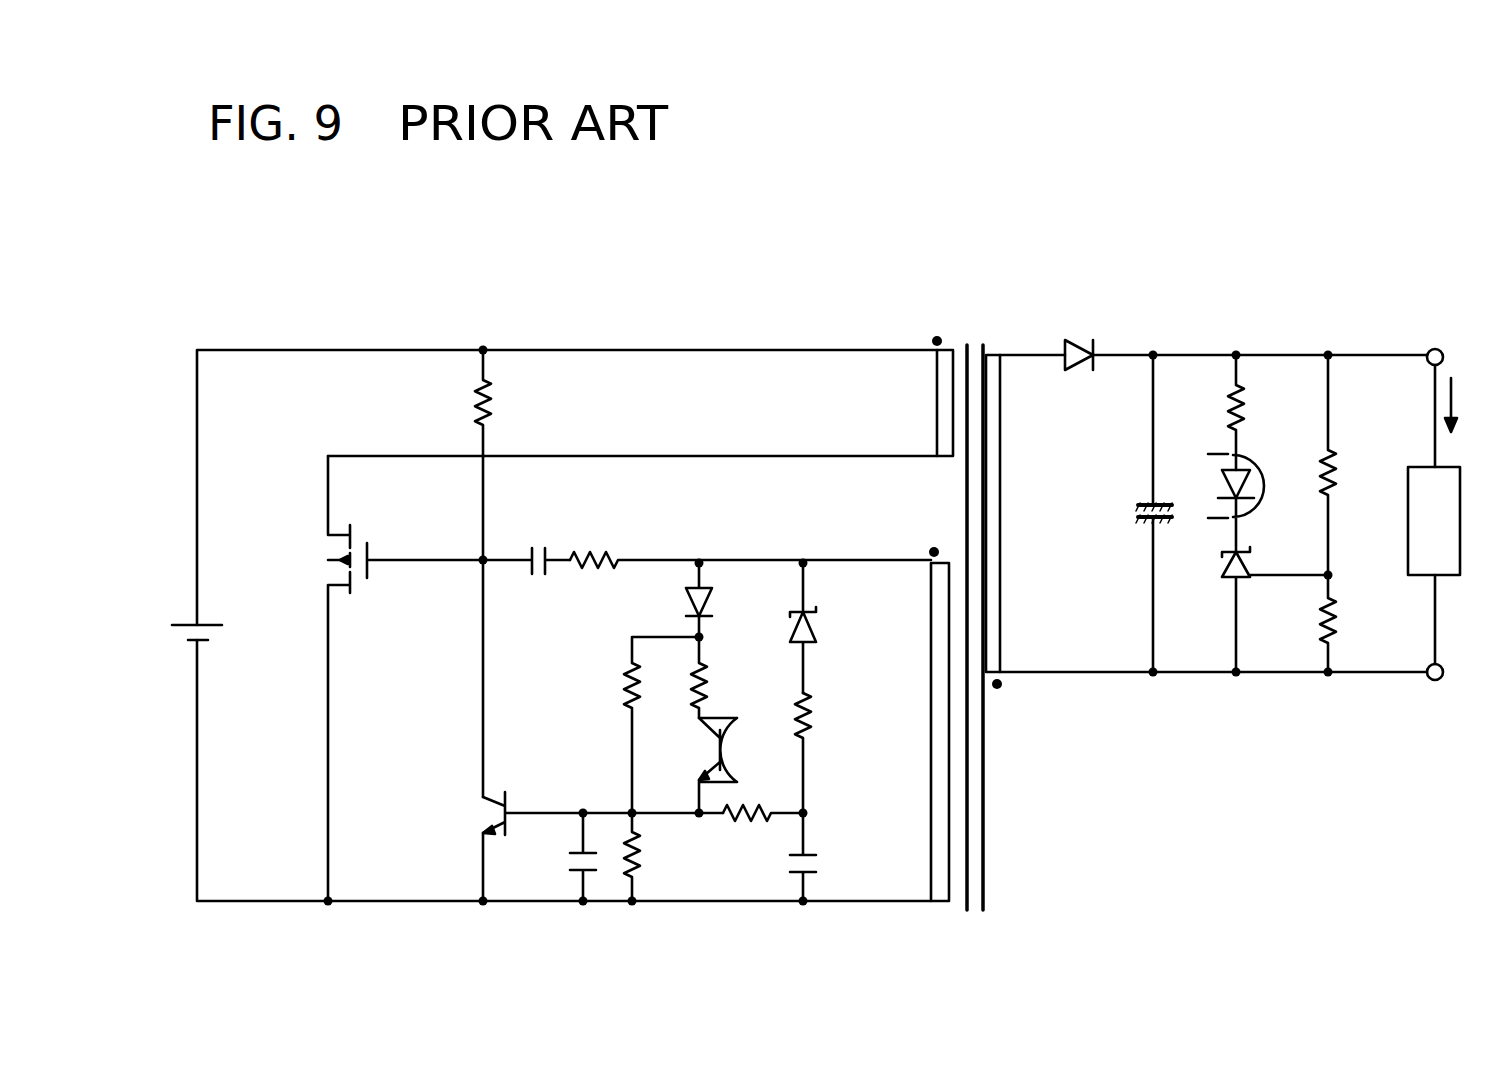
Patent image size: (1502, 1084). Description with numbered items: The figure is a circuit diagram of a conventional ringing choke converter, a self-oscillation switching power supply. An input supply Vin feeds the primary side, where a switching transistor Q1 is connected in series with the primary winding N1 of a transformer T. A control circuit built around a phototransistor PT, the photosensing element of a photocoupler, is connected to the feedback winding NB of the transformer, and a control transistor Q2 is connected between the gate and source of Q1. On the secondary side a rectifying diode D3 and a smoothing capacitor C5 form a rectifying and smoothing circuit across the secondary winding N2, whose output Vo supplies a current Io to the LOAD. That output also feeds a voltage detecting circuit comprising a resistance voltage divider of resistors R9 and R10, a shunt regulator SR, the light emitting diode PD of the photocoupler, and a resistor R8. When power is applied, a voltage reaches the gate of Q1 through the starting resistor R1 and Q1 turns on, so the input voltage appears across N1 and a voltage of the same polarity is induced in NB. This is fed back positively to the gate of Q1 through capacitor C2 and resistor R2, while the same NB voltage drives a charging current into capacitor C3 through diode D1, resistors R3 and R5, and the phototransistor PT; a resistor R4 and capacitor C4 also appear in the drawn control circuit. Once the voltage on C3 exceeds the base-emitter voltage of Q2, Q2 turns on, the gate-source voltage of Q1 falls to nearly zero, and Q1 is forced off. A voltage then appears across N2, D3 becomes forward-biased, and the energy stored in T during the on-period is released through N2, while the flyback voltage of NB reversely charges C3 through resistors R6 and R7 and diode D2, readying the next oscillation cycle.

The input DC voltage source Vin is at (178, 634).
The starting resistor R1 is at (506, 573).
The switching transistor Q1 is at (384, 678).
The capacitor C2 is at (526, 577).
The resistor R2 is at (750, 579).
The diode D1 is at (716, 600).
The resistor R3 is at (643, 725).
The resistor R5 is at (717, 677).
The phototransistor PT is at (731, 765).
The diode D2 is at (819, 628).
The resistor R7 is at (821, 753).
The control transistor Q2 is at (512, 806).
The capacitor C3 is at (564, 857).
The resistor R4 is at (653, 857).
The resistor R6 is at (763, 835).
The capacitor C4 is at (819, 857).
The transformer T is at (977, 338).
The primary winding N1 is at (924, 403).
The feedback winding NB is at (918, 732).
The secondary winding N2 is at (1012, 513).
The rectifying diode D3 is at (1079, 340).
The smoothing capacitor C5 is at (1132, 513).
The resistor R8 is at (1255, 412).
The light emitting diode PD is at (1258, 458).
The shunt regulator SR is at (1230, 579).
The resistor R9 is at (1348, 465).
The resistor R10 is at (1356, 623).
The load LOAD is at (1434, 514).
The output voltage Vo is at (1403, 338).
The output current Io is at (1467, 405).